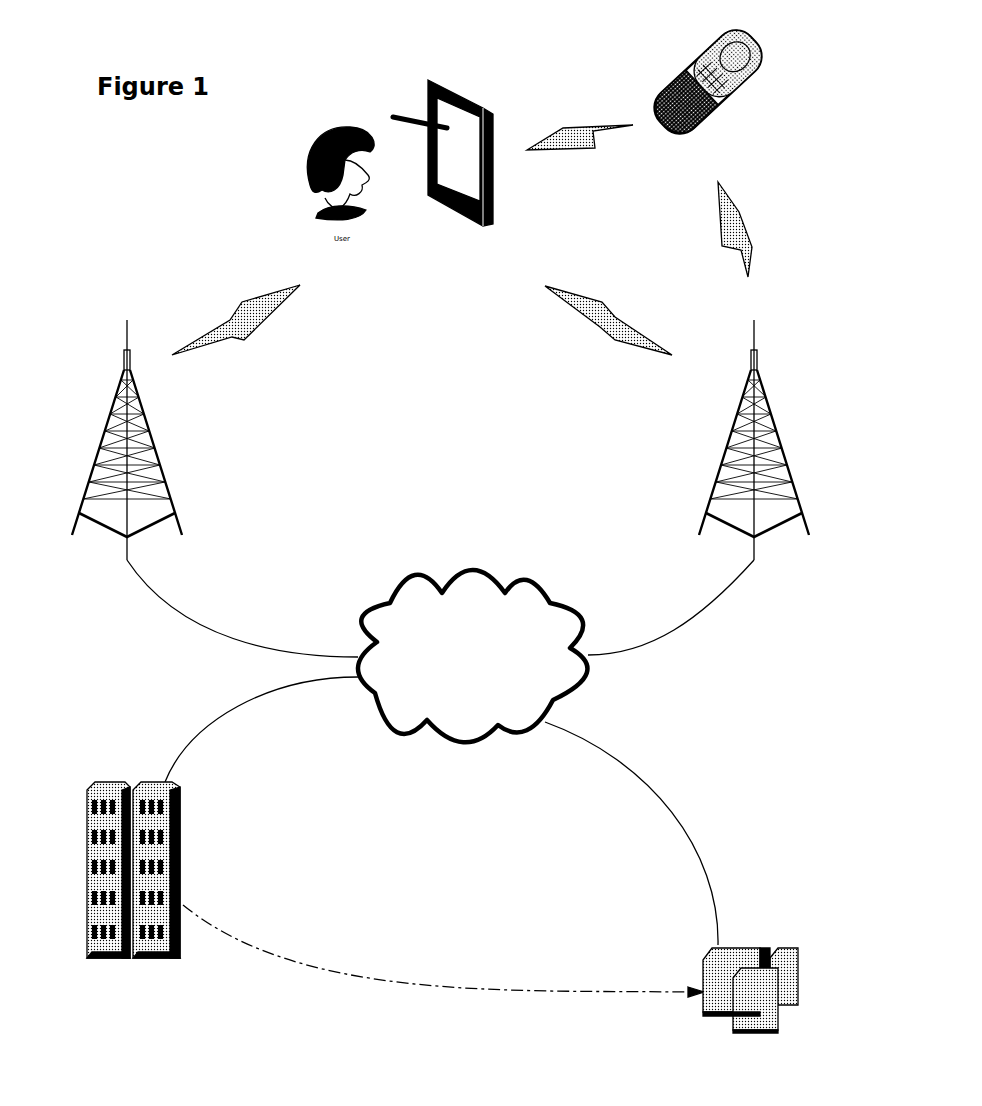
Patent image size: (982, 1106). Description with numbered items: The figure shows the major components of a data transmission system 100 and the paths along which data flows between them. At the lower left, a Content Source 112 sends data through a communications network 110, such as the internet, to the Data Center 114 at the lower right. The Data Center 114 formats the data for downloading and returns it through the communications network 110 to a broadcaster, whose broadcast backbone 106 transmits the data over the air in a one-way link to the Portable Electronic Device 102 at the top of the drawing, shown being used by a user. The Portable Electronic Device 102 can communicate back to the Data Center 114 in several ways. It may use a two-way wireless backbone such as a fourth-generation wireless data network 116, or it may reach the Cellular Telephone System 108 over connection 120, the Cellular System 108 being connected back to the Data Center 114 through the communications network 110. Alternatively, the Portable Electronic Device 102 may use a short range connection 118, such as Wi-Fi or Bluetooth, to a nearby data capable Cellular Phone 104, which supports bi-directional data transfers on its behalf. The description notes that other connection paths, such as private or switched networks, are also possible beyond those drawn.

The data transmission system 100 is at (160, 203).
The Portable Electronic Device 102 is at (475, 93).
The data capable Cellular Phone 104 is at (690, 72).
The broadcast backbone 106 is at (130, 343).
The Cellular Telephone System 108 is at (750, 340).
The communications network 110 is at (503, 583).
The Content Source 112 is at (180, 845).
The Data Center 114 is at (703, 970).
The 4G wireless data network 116 is at (577, 300).
The short range connection 118 is at (608, 135).
The connection 120 is at (754, 246).